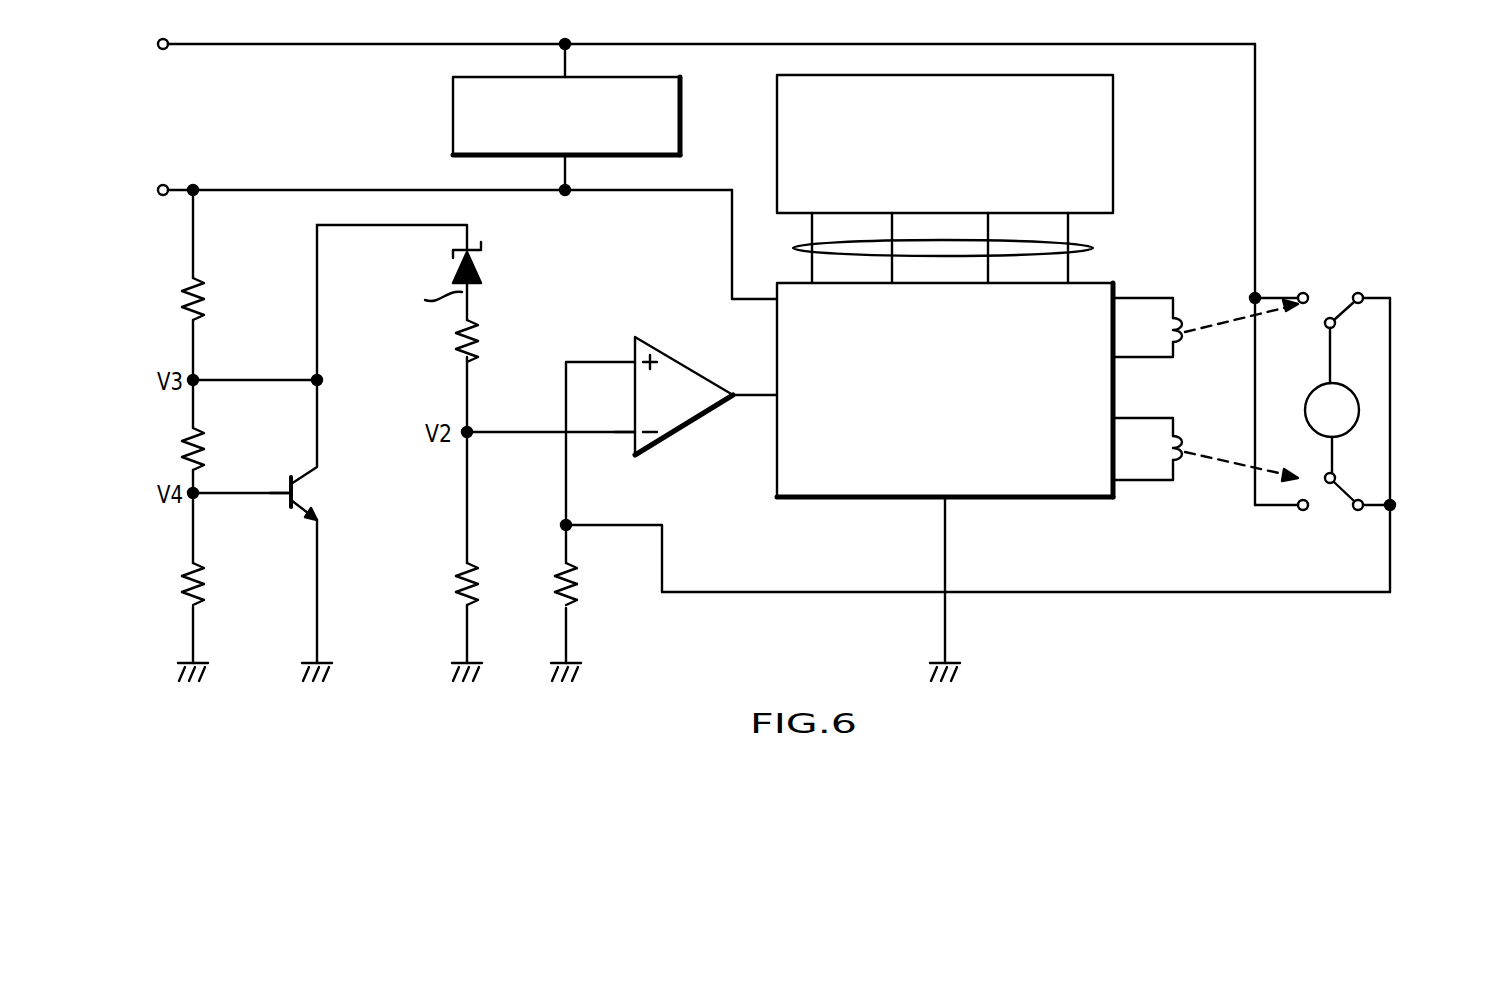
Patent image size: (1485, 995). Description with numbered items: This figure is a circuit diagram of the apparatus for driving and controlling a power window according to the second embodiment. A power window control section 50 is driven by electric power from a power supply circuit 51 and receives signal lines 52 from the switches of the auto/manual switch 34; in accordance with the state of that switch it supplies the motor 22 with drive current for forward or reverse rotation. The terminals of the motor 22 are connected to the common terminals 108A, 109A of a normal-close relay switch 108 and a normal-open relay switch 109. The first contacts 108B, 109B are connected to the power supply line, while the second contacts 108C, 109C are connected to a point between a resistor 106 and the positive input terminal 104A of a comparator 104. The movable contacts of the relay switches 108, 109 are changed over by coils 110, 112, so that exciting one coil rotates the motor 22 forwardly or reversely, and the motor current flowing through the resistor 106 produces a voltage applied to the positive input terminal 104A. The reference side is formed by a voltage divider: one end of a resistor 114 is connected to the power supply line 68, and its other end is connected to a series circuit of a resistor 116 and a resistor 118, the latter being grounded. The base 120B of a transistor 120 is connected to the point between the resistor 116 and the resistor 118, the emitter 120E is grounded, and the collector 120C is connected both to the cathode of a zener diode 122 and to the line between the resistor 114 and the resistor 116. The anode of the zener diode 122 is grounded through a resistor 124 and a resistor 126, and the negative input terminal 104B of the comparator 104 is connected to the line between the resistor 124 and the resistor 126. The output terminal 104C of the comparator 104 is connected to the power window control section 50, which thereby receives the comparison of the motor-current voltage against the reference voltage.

The motor 22 is at (1360, 408).
The auto/manual switch 34 is at (873, 75).
The power window control section 50 is at (966, 407).
The power supply circuit 51 is at (632, 76).
The signal lines 52 is at (1093, 248).
The power supply line 68 is at (274, 186).
The comparator 104 is at (669, 395).
The positive input terminal 104A is at (625, 358).
The negative input terminal 104B is at (622, 438).
The output terminal 104C is at (748, 392).
The resistor 106 is at (582, 582).
The normal-close relay switch 108 is at (1362, 290).
The common terminal 108A is at (1336, 324).
The first contact 108B is at (1305, 290).
The second contact 108C is at (1363, 292).
The normal-open relay switch 109 is at (1366, 517).
The common terminal 109A is at (1336, 477).
The first contact 109B is at (1306, 512).
The second contact 109C is at (1395, 508).
The coil 110 is at (1165, 300).
The coil 112 is at (1160, 470).
The resistor 114 is at (210, 303).
The resistor 116 is at (215, 450).
The resistor 118 is at (207, 590).
The transistor 120 is at (361, 444).
The base 120B is at (285, 492).
The collector 120C is at (320, 465).
The emitter 120E is at (318, 527).
The zener diode 122 is at (484, 262).
The resistor 124 is at (452, 355).
The resistor 126 is at (458, 605).